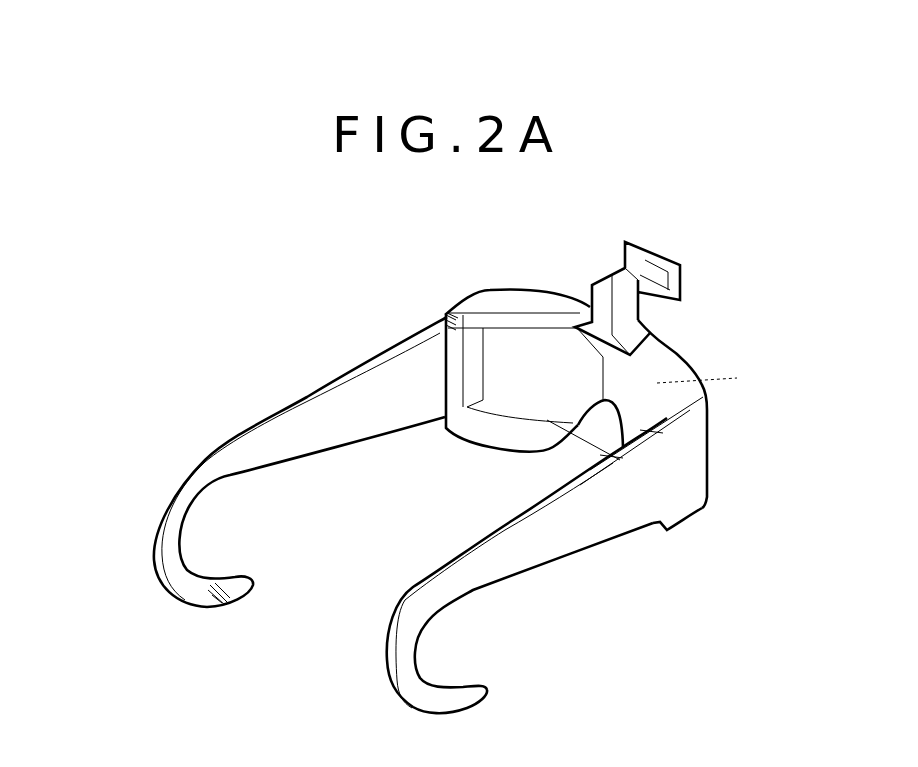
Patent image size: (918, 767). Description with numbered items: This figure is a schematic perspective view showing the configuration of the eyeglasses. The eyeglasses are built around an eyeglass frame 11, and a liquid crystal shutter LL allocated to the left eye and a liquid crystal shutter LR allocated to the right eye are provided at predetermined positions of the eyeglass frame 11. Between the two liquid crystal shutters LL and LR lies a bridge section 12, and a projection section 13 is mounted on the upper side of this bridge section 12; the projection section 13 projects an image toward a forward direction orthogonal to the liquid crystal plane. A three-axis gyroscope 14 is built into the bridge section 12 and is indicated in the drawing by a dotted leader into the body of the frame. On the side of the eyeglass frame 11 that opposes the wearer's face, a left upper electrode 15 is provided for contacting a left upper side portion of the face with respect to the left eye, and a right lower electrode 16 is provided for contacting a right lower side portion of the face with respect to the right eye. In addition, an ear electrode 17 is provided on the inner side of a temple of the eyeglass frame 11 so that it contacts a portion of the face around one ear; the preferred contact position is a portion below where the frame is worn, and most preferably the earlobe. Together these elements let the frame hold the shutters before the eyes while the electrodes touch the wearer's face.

The eyeglass frame 11 is at (478, 293).
The bridge section 12 is at (667, 353).
The projection section 13 is at (650, 250).
The three-axis gyroscope 14 is at (713, 380).
The left upper electrode 15 is at (445, 315).
The right lower electrode 16 is at (670, 530).
The ear electrode 17 is at (218, 608).
The liquid crystal shutter for the right eye LR is at (660, 433).
The liquid crystal shutter for the left eye LL is at (623, 458).